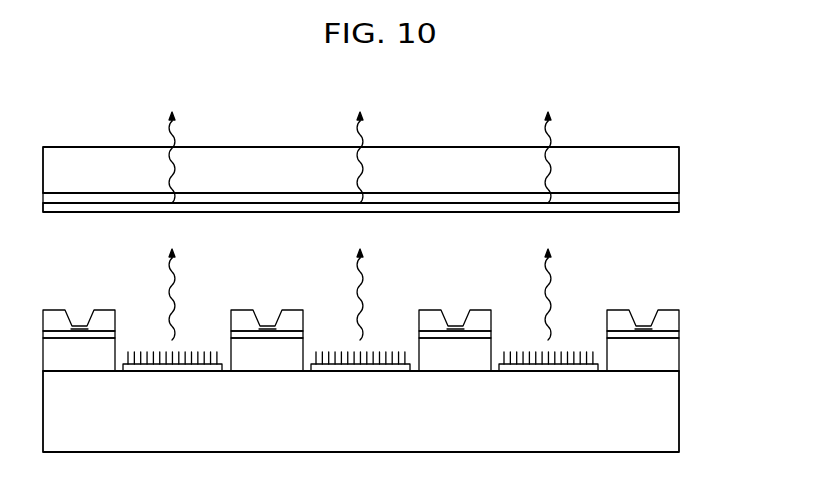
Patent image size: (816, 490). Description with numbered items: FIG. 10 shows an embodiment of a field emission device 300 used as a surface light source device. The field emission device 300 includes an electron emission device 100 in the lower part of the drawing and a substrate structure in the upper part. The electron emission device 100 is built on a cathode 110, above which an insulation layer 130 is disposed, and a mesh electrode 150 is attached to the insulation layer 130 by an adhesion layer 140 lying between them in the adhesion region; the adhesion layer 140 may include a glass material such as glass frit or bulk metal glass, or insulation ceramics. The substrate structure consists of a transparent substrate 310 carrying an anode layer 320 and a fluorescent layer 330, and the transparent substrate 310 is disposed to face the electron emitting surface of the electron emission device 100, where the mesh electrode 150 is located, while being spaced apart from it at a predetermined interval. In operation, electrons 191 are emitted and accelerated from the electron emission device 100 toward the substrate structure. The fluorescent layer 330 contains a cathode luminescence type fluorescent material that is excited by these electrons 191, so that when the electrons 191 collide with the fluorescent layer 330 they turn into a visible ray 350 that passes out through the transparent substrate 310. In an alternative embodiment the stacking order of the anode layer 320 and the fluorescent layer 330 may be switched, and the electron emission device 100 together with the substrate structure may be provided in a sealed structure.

The electron emission device 100 is at (391, 344).
The cathode 110 is at (676, 413).
The insulation layer 130 is at (675, 358).
The adhesion layer 140 is at (675, 336).
The mesh electrode 150 is at (675, 320).
The electrons 191 is at (553, 287).
The field emission device 300 is at (391, 147).
The transparent substrate 310 is at (677, 166).
The anode layer 320 is at (677, 197).
The fluorescent layer 330 is at (677, 208).
The visible ray 350 is at (552, 132).